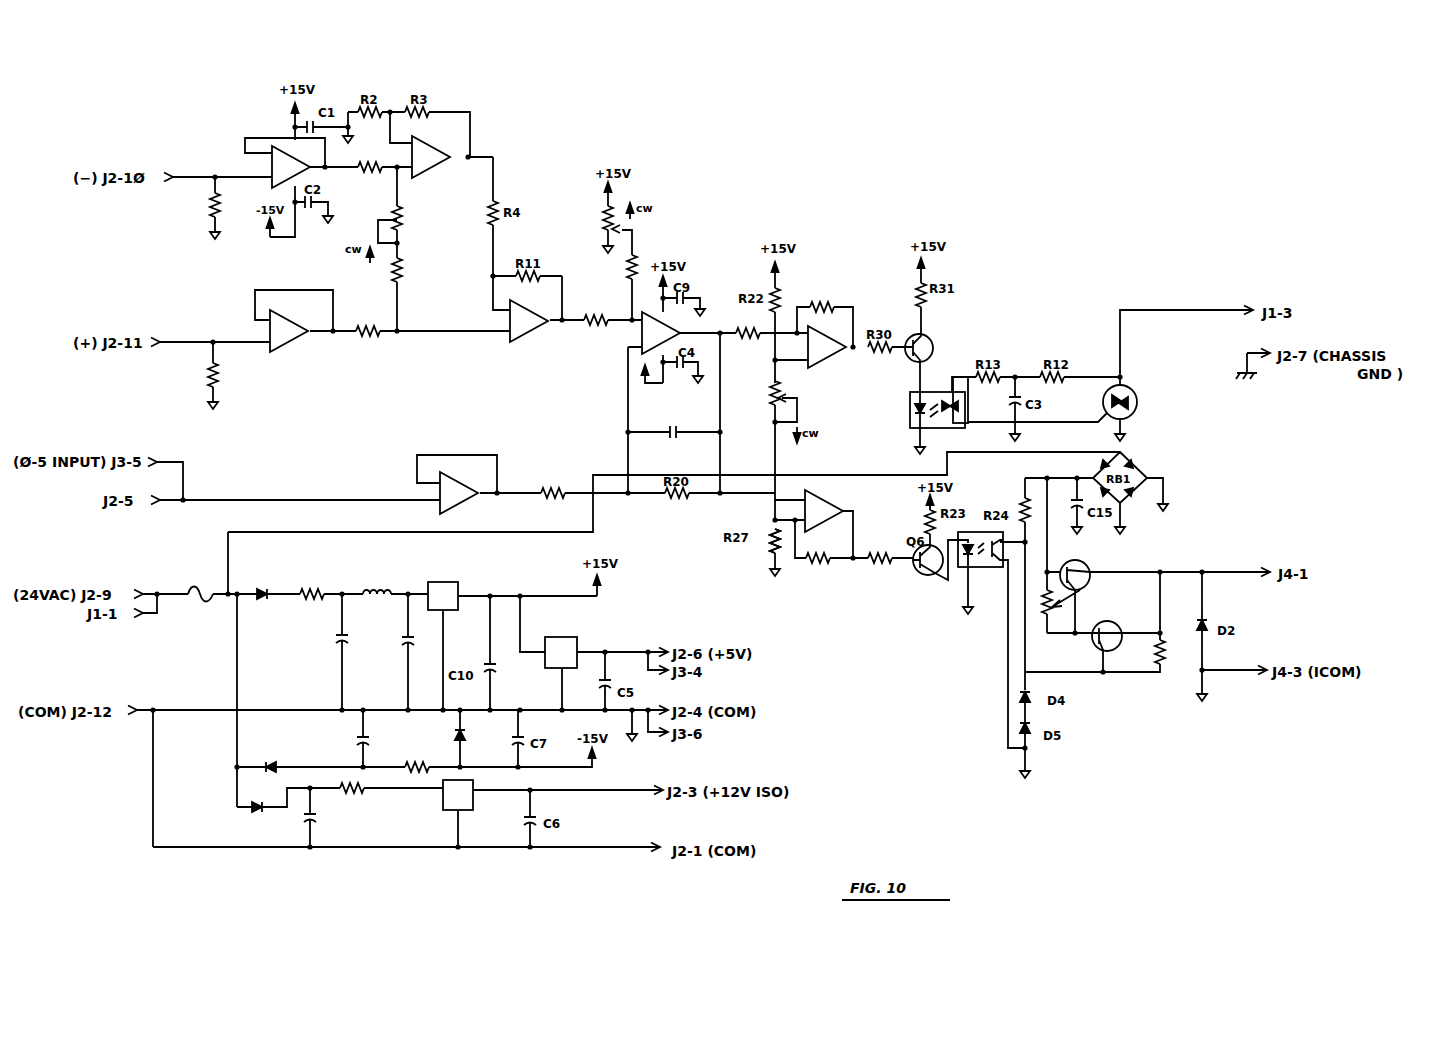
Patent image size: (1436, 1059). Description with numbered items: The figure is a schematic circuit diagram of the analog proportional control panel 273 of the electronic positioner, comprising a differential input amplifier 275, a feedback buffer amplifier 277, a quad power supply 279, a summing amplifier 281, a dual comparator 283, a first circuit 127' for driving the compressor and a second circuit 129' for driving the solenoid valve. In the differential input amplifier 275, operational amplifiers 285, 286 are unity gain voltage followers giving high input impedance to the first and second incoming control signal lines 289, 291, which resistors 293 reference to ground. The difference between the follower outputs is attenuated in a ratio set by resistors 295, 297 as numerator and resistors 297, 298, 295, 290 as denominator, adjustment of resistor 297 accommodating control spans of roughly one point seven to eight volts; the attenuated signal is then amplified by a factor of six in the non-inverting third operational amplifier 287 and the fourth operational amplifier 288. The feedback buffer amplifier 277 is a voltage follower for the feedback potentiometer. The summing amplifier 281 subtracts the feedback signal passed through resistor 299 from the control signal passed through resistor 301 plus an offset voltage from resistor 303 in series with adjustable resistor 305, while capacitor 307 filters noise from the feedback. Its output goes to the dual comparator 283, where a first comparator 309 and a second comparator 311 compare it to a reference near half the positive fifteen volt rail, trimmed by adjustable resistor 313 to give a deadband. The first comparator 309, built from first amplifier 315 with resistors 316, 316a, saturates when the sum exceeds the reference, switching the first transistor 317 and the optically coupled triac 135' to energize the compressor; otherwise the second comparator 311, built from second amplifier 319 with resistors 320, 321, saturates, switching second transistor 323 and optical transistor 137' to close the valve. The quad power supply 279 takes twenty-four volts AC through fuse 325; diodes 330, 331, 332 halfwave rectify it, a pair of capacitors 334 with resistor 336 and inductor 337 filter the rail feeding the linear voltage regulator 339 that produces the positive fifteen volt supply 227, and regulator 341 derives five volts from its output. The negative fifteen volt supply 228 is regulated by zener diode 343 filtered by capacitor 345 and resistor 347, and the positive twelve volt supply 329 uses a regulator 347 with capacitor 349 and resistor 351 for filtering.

The first incoming control signal line 289 is at (173, 175).
The operational amplifier 285 is at (270, 160).
The resistors 293 is at (210, 212).
The resistor 298 is at (368, 174).
The third operational amplifier 287 is at (425, 172).
The resistor 297 is at (403, 227).
The resistor 295 is at (403, 278).
The differential input amplifier 275 is at (380, 302).
The second incoming control signal line 291 is at (172, 342).
The operational amplifier 286 is at (285, 350).
The resistor 290 is at (378, 343).
The fourth operational amplifier 288 is at (510, 326).
The resistor 301 is at (590, 328).
The resistor 303 is at (638, 258).
The adjustable resistor 305 is at (604, 230).
The summing amplifier 281 is at (642, 345).
The capacitor 307 is at (676, 440).
The resistor 316 is at (748, 340).
The first amplifier 315 is at (835, 357).
The first comparator 309 is at (792, 350).
The feedback resistor R28 316a is at (840, 305).
The first transistor 317 is at (934, 345).
The adjustable resistor 313 is at (773, 402).
The dual comparator 283 is at (870, 420).
The optically coupled triac 135' is at (951, 414).
The first circuit 127' is at (1147, 413).
The feedback buffer amplifier 277 is at (440, 483).
The resistor 299 is at (552, 500).
The second comparator 311 is at (773, 507).
The resistor 320 is at (768, 545).
The second amplifier 319 is at (825, 498).
The resistor 321 is at (818, 566).
The second transistor 323 is at (918, 565).
The analog proportional control panel 273 is at (877, 620).
The optical transistor 137' is at (982, 558).
The second circuit 129' is at (1121, 606).
The fuse 325 is at (197, 603).
The diode 330 is at (265, 603).
The resistor 336 is at (315, 600).
The inductor 337 is at (375, 600).
The +15 VDC linear voltage regulator 339 is at (455, 582).
The +15 VDC supply 227 is at (480, 639).
The pair of capacitors 334 is at (403, 652).
The +5 VDC linear voltage regulator 341 is at (550, 670).
The capacitor 345 is at (356, 740).
The zener diode 343 is at (455, 735).
The resistor 347 is at (425, 755).
The diode 332 is at (280, 765).
The resistor 351 is at (360, 790).
The -15 VDC supply 228 is at (507, 763).
The +12 VDC supply 329 is at (517, 815).
The diode 331 is at (252, 808).
The capacitor 349 is at (305, 818).
The quad power supply 279 is at (450, 884).